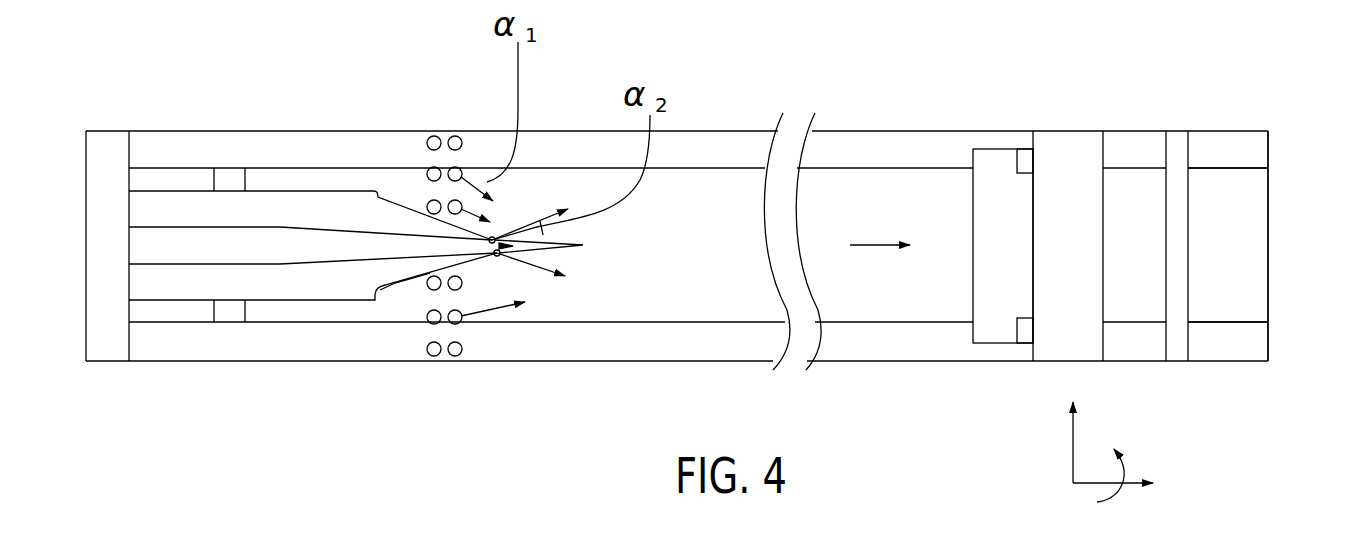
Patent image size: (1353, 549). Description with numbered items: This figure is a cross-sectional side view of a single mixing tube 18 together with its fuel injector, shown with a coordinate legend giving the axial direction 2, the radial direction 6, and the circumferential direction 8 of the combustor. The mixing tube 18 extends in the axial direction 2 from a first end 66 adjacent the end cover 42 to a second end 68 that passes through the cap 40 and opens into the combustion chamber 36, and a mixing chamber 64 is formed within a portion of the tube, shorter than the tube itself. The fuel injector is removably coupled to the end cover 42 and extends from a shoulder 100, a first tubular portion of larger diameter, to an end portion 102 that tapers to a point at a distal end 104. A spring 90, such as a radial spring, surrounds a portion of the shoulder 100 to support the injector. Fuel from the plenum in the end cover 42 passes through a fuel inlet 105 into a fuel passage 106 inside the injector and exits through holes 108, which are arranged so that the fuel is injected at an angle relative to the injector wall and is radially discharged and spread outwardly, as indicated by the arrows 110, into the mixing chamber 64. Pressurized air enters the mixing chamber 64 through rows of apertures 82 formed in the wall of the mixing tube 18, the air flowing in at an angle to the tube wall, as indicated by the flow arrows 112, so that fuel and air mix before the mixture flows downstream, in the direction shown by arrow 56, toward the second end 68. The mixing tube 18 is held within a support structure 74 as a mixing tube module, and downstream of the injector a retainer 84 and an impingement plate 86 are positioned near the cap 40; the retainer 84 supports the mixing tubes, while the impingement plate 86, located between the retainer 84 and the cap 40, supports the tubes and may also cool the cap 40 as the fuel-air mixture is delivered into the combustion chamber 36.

The mixing tube 18 is at (723, 145).
The end cover 42 is at (112, 138).
The mixing chamber 64 is at (716, 270).
The first end 66 is at (125, 342).
The spring 90 is at (228, 175).
The shoulder 100 is at (273, 302).
The fuel passage 106 is at (350, 237).
The fuel inlet 105 is at (128, 245).
The support structure 74 is at (358, 287).
The end portion 102 is at (394, 284).
The apertures 82 is at (428, 137).
The fluid flow 112 is at (497, 205).
The holes 108 is at (496, 257).
The distal end 104 is at (583, 245).
The arrows 110 is at (543, 217).
The flow direction 56 is at (876, 245).
The retainer 84 is at (1000, 160).
The impingement plate 86 is at (1070, 143).
The cap 40 is at (1178, 145).
The second end 68 is at (1265, 154).
The combustion chamber 36 is at (1332, 270).
The radial direction 6 is at (1073, 448).
The axial direction 2 is at (1087, 485).
The circumferential direction 8 is at (1124, 497).